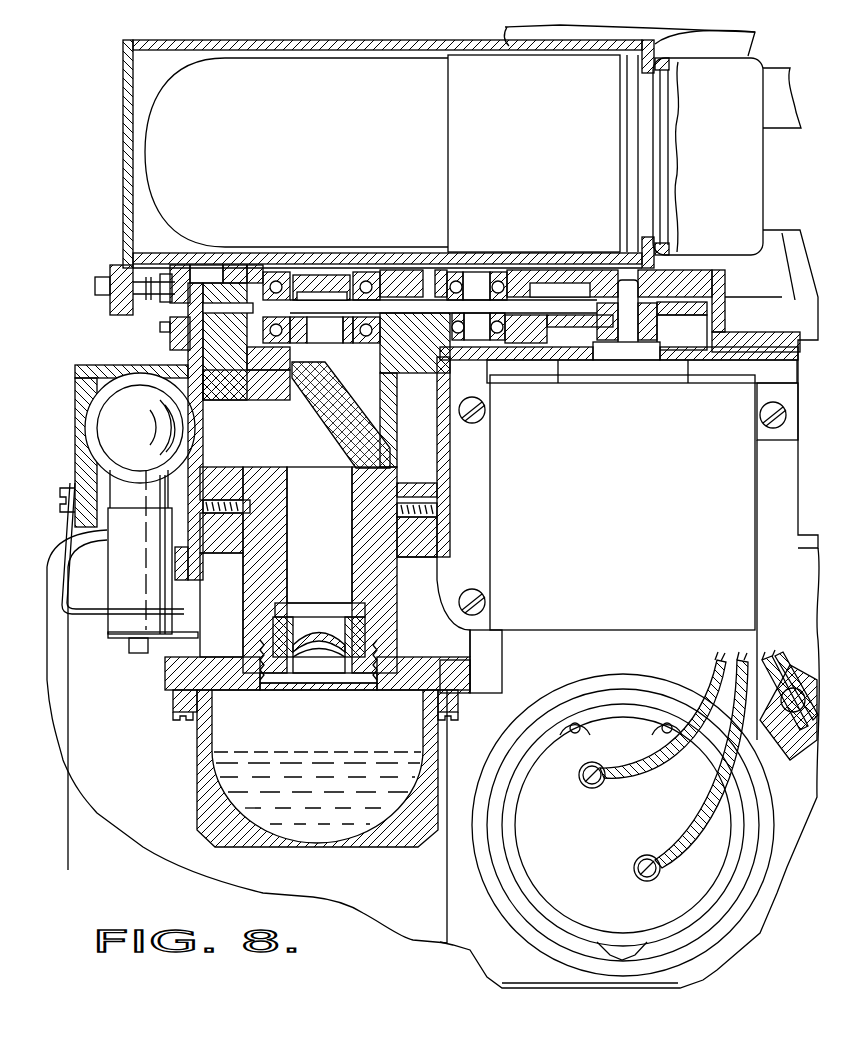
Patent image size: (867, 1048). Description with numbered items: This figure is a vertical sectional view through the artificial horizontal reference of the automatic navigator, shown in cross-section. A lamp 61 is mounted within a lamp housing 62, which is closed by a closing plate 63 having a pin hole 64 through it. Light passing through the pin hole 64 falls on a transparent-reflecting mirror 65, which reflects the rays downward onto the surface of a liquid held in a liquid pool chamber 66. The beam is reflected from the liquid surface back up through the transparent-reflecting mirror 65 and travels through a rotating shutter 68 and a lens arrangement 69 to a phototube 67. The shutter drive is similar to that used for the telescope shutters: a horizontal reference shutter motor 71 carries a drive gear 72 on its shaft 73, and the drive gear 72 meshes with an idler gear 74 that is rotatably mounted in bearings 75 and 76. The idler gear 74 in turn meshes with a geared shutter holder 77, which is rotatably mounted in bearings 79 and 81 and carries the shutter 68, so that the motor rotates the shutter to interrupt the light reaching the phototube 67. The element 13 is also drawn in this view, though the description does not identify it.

The circular lamp housing 13 is at (607, 830).
The lamp 61 is at (140, 428).
The lamp housing 62 is at (77, 447).
The closing plate 63 is at (190, 357).
The pin hole 64 is at (202, 432).
The transparent-reflecting mirror 65 is at (352, 406).
The liquid pool chamber 66 is at (207, 797).
The phototube 67 is at (355, 87).
The rotating shutter 68 is at (321, 330).
The lens arrangement 69 is at (322, 276).
The horizontal reference shutter motor 71 is at (652, 472).
The drive gear 72 is at (640, 338).
The shaft 73 is at (617, 268).
The idler gear 74 is at (350, 380).
The bearing 75 is at (457, 272).
The bearing 76 is at (446, 362).
The geared shutter holder 77 is at (384, 272).
The bearing 79 is at (275, 272).
The bearing 81 is at (288, 353).